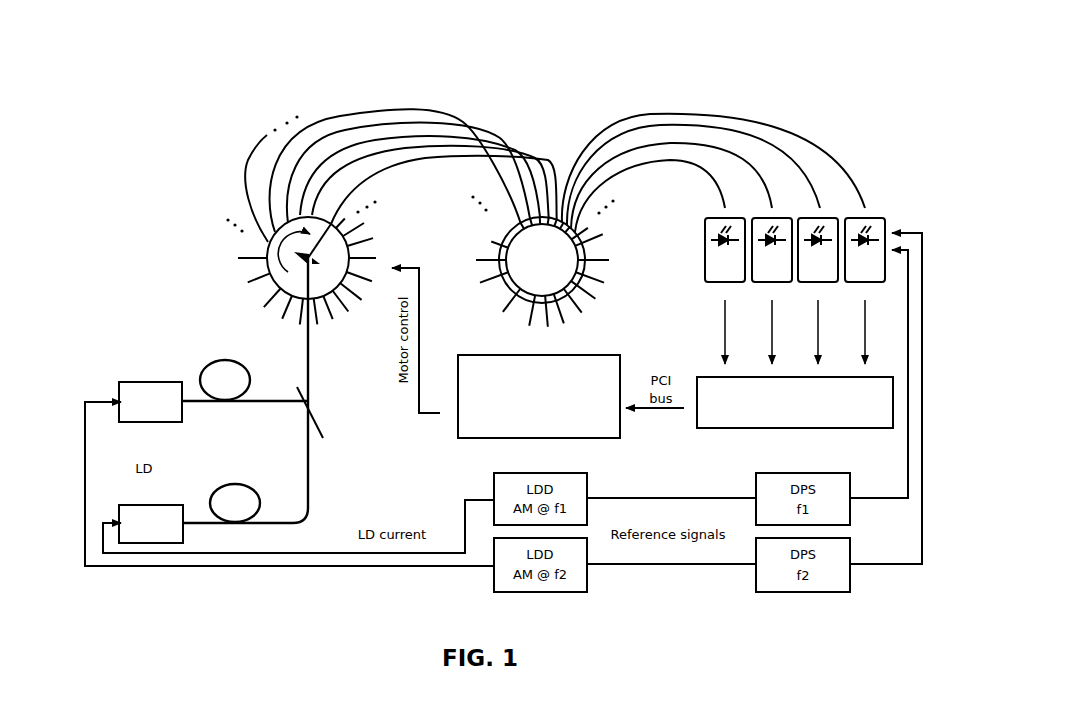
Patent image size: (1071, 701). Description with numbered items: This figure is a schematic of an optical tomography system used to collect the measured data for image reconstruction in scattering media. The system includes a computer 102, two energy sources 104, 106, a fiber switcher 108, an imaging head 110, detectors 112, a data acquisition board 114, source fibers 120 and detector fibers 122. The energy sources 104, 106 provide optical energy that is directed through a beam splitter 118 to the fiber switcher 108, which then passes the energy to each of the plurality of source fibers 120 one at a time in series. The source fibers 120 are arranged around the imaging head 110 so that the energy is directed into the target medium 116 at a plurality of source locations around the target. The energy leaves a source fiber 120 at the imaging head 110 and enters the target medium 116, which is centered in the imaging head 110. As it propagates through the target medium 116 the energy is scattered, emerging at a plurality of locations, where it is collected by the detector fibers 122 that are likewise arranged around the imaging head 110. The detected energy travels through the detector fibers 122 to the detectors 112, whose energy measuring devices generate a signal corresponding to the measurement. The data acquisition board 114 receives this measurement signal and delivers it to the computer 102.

The computer 102 is at (584, 362).
The energy source 104 is at (137, 381).
The energy source 106 is at (147, 504).
The fiber switcher 108 is at (267, 257).
The imaging head 110 is at (508, 297).
The detectors 112 is at (868, 217).
The data acquisition board 114 is at (793, 428).
The target medium 116 is at (565, 266).
The beam splitter 118 is at (322, 438).
The source fibers 120 is at (363, 115).
The detector fibers 122 is at (704, 116).